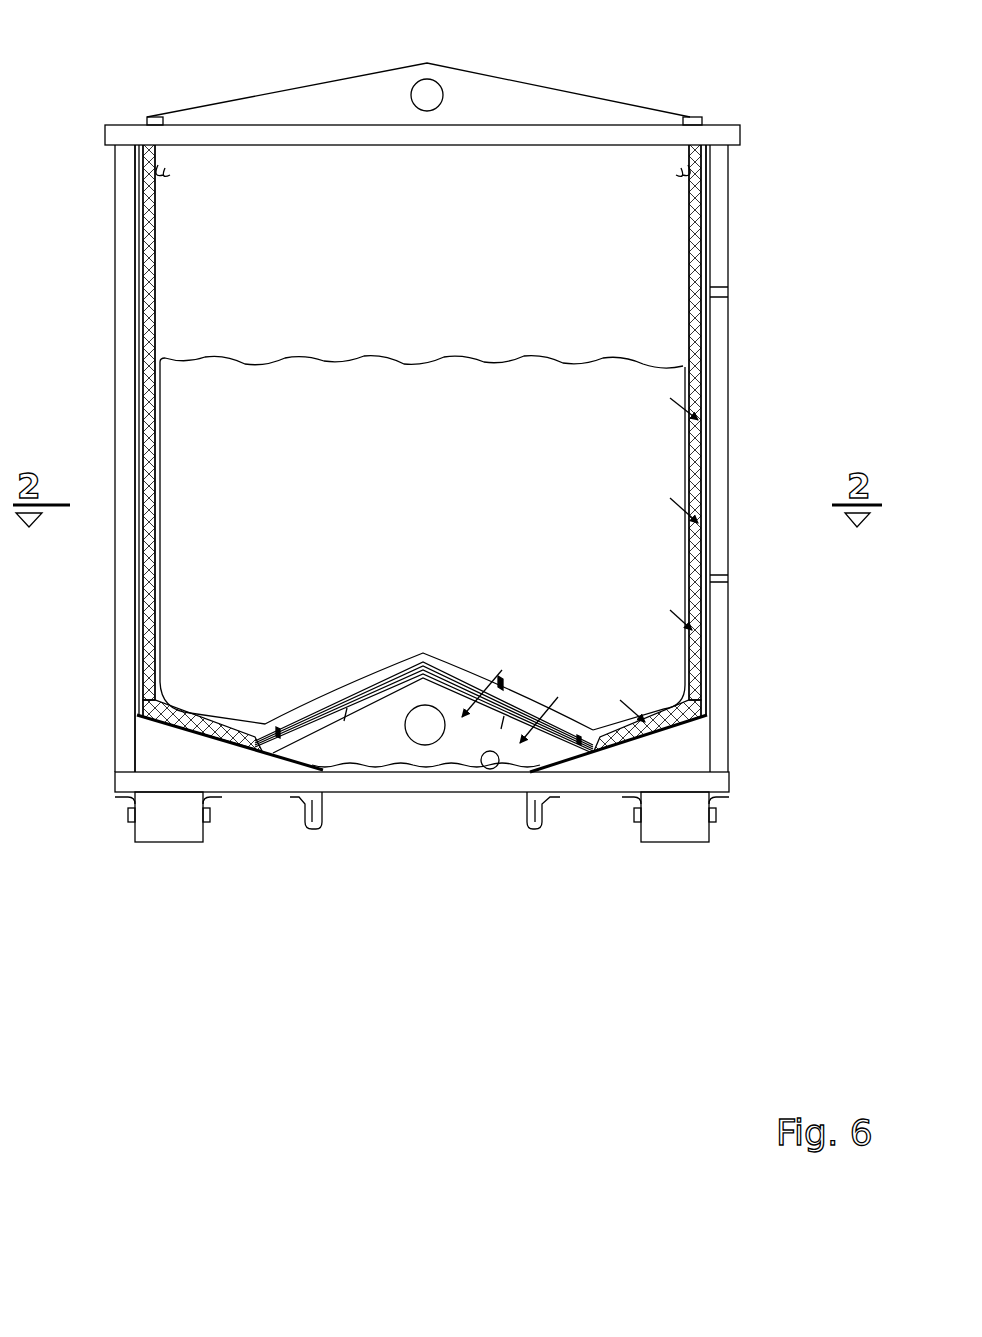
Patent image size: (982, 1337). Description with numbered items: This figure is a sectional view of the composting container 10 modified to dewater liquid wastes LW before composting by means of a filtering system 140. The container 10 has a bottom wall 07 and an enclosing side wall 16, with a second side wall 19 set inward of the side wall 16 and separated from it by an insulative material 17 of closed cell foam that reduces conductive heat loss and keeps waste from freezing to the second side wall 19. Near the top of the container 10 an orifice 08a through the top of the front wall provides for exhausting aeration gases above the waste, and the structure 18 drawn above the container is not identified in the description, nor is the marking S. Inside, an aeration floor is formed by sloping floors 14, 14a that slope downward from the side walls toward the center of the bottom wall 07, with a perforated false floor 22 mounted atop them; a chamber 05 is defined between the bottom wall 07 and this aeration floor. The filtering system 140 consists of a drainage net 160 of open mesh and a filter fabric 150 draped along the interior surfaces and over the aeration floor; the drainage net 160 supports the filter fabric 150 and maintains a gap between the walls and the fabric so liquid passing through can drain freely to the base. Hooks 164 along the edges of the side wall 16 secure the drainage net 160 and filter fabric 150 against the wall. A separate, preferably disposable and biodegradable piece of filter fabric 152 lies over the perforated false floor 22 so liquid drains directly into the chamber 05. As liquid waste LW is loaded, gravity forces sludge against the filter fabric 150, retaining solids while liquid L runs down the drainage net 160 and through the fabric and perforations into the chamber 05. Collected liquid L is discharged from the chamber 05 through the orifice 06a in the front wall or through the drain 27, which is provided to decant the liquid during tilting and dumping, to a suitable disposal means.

The bottom wall 07 is at (263, 792).
The roof / lifting frame 18 is at (458, 68).
The orifice 08a is at (427, 95).
The side wall 16 is at (115, 212).
The insulative material 17 is at (125, 285).
The second side wall 19 is at (143, 383).
The container 10 is at (730, 412).
The drainage net 160 is at (153, 265).
The sloping floor 14 is at (233, 735).
The sediment / liner corner S is at (665, 708).
The sloping floor 14a is at (677, 727).
The hooks 164 is at (160, 177).
The filtering system 140 is at (155, 455).
The filter fabric 150 is at (167, 687).
The liquid waste LW is at (285, 365).
The filter fabric 152 is at (435, 663).
The perforated false floor 22 is at (522, 723).
The orifice 06a is at (420, 717).
The chamber 05 is at (363, 745).
The liquid L is at (412, 840).
The drain 27 is at (486, 769).